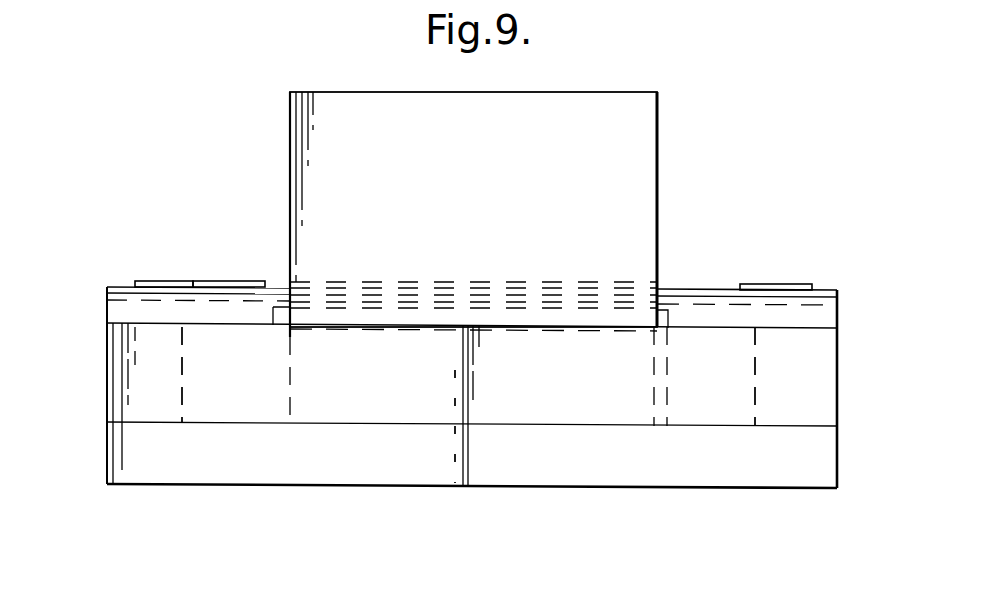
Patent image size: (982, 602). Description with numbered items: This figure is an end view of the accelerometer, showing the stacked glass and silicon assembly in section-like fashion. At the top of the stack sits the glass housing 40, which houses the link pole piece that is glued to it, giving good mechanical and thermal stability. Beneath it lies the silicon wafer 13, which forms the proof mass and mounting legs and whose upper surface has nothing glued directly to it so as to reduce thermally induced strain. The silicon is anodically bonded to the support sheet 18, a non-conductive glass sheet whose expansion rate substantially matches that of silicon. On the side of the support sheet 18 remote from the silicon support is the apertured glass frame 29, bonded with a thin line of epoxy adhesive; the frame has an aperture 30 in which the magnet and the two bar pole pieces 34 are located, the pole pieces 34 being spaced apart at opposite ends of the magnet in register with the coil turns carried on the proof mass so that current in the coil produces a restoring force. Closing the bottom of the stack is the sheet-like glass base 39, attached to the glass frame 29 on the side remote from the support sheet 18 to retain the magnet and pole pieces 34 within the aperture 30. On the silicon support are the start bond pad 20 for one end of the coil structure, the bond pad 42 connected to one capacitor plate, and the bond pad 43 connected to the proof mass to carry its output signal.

The silicon wafer 13 is at (825, 293).
The support sheet 18 is at (108, 310).
The start bond pad 20 is at (231, 282).
The apertured glass frame 29 is at (822, 382).
The aperture 30 is at (232, 393).
The bar pole pieces 34 is at (430, 395).
The glass base 39 is at (818, 462).
The glass housing 40 is at (600, 110).
The bond pad 42 is at (778, 290).
The bond pad 43 is at (160, 282).